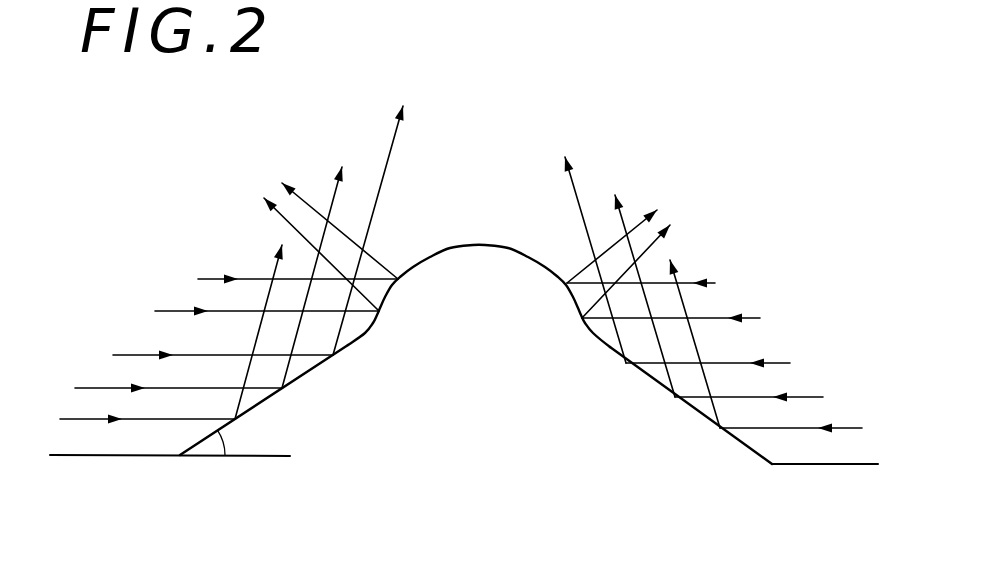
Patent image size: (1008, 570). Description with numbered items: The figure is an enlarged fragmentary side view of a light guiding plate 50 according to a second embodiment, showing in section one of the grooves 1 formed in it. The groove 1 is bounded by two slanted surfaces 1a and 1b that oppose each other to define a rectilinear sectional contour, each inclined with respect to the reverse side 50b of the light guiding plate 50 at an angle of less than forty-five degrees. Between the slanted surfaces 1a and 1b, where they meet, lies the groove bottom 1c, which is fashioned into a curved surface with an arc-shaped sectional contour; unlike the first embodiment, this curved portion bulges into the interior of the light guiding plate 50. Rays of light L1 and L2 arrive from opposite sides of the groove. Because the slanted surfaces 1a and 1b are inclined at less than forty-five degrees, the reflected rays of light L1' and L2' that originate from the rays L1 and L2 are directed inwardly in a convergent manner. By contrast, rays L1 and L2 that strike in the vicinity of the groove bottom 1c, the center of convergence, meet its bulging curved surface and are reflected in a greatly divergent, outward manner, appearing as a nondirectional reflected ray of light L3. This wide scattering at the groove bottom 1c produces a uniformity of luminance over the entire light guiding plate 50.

The groove 1 is at (476, 322).
The slanted surface 1a is at (307, 375).
The slanted surface 1b is at (657, 385).
The groove bottom 1c is at (466, 248).
The light guiding plate 50 is at (167, 215).
The reverse side of the light guiding plate 50b is at (818, 466).
The ray of light L1 is at (229, 349).
The reflected ray of light L1' is at (319, 248).
The ray of light L2 is at (714, 356).
The reflected ray of light L2' is at (664, 292).
The reflected ray of light L3 is at (312, 203).